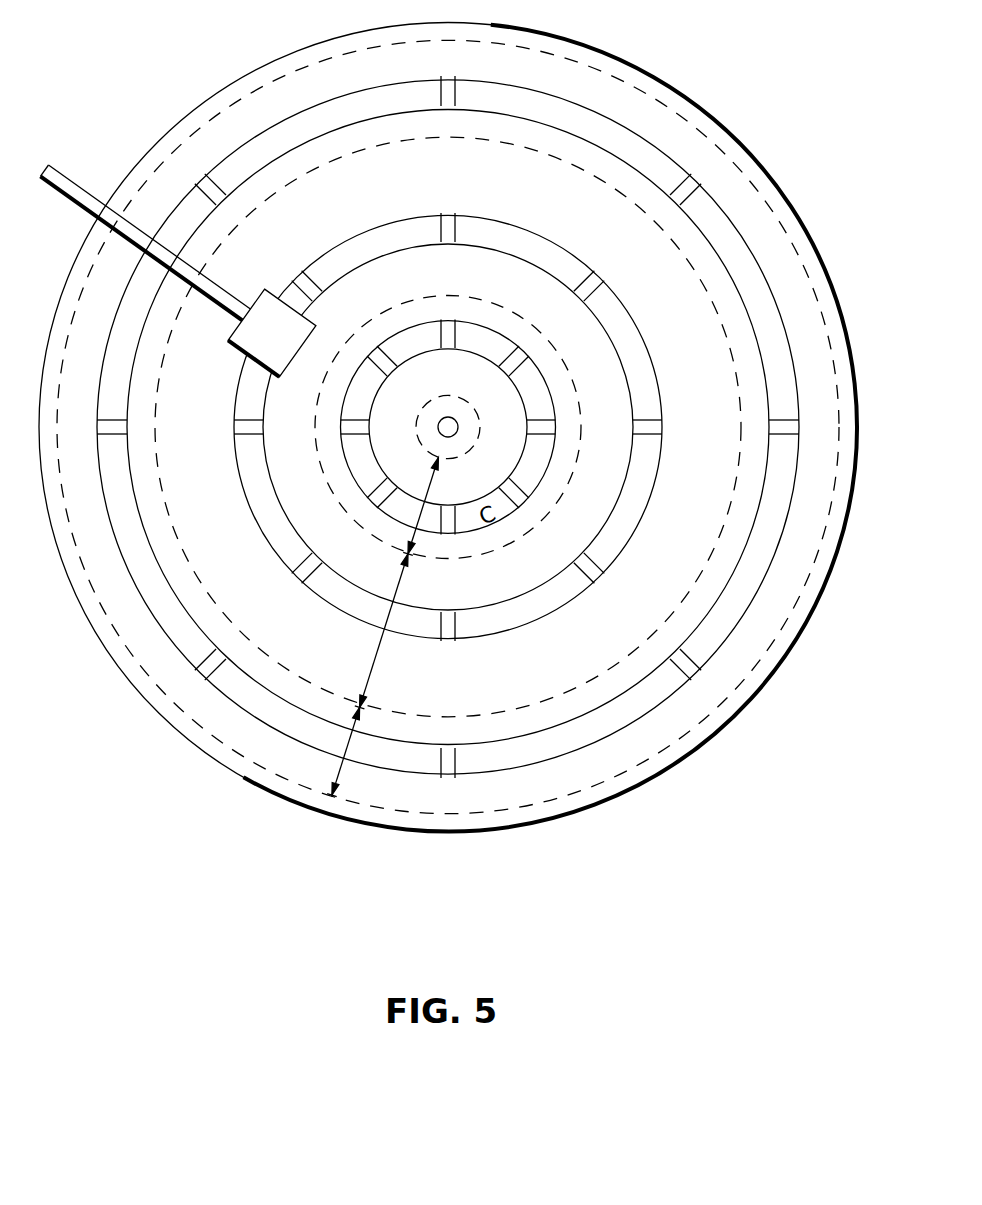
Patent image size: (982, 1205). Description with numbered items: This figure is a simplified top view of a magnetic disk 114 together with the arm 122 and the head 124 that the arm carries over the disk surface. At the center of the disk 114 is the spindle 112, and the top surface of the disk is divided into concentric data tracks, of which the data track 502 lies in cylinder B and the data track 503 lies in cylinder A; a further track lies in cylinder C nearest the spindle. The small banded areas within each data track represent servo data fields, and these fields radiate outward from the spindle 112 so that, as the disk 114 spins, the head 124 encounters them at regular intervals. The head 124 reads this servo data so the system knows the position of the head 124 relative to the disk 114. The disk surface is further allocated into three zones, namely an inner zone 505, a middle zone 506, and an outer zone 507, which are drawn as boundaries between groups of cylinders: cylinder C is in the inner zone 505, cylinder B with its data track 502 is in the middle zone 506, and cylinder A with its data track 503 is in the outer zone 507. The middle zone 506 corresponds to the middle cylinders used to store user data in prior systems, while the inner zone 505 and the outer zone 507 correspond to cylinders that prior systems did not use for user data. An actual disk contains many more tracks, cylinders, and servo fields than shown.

The spindle 112 is at (437, 419).
The disk 114 is at (642, 785).
The arm 122 is at (70, 175).
The head 124 is at (237, 325).
The data track 502 is at (660, 462).
The data track 503 is at (765, 580).
The inner zone 505 is at (428, 493).
The middle zone 506 is at (377, 658).
The outer zone 507 is at (345, 773).